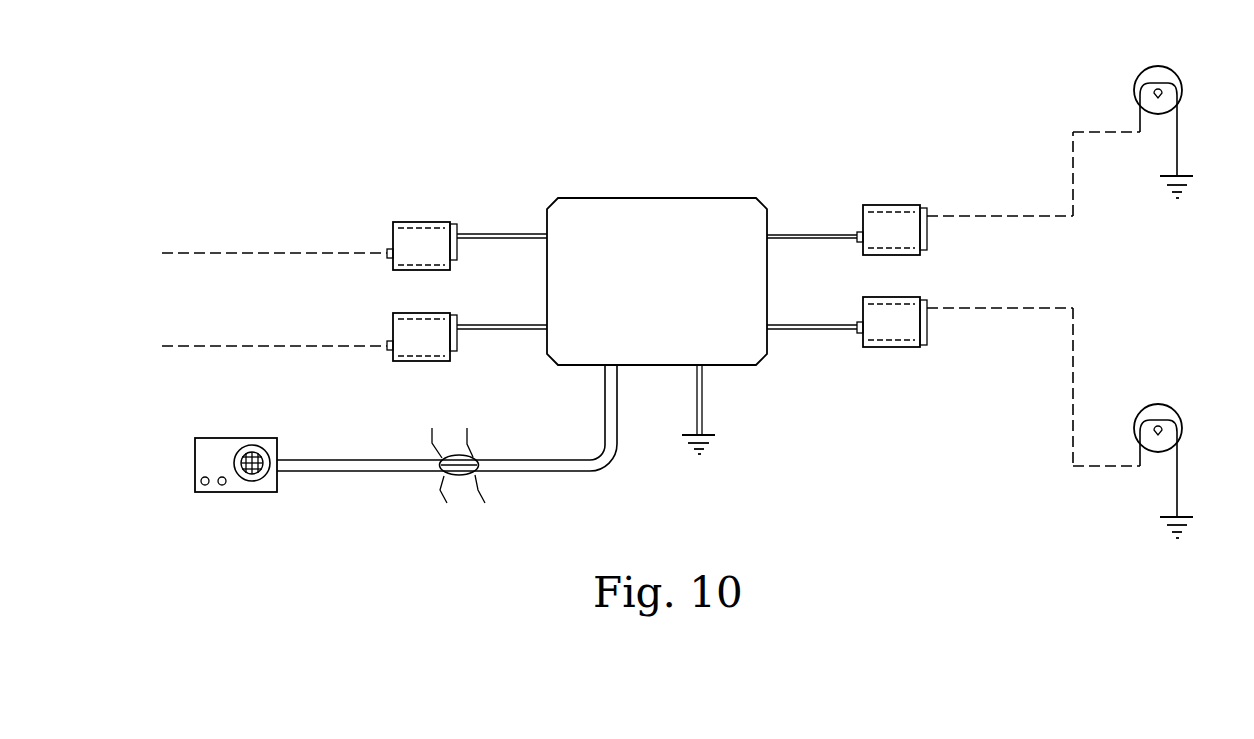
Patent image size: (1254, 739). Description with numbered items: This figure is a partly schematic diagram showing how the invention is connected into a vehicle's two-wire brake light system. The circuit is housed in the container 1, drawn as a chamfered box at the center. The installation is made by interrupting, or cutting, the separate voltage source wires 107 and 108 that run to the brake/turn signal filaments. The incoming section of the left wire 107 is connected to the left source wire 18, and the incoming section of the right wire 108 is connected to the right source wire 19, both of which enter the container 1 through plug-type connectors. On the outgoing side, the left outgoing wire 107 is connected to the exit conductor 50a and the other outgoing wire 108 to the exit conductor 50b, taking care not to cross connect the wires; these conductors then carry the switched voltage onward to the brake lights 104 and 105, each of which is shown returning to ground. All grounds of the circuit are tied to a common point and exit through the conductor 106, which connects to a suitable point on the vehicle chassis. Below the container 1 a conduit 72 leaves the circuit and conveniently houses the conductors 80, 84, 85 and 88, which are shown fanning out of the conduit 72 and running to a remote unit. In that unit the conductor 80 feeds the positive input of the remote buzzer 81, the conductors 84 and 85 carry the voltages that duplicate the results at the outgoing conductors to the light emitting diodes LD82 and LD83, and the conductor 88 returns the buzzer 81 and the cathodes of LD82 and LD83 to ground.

The container 1 is at (620, 217).
The source wire 18 is at (522, 233).
The source wire 19 is at (517, 332).
The outgoing conductor 50a is at (825, 233).
The outgoing conductor 50b is at (828, 330).
The conduit 72 is at (543, 472).
The conductor 80 is at (458, 455).
The remote buzzer 81 is at (247, 452).
The conductor 84 is at (444, 477).
The conductor 85 is at (463, 475).
The conductor 88 is at (468, 475).
The brake light 104 is at (1140, 85).
The brake light 105 is at (1177, 413).
The conductor 106 is at (1168, 193).
The left wire 107 is at (295, 252).
The right wire 108 is at (295, 347).
The light emitting diode LD82 is at (225, 485).
The light emitting diode LD83 is at (203, 485).